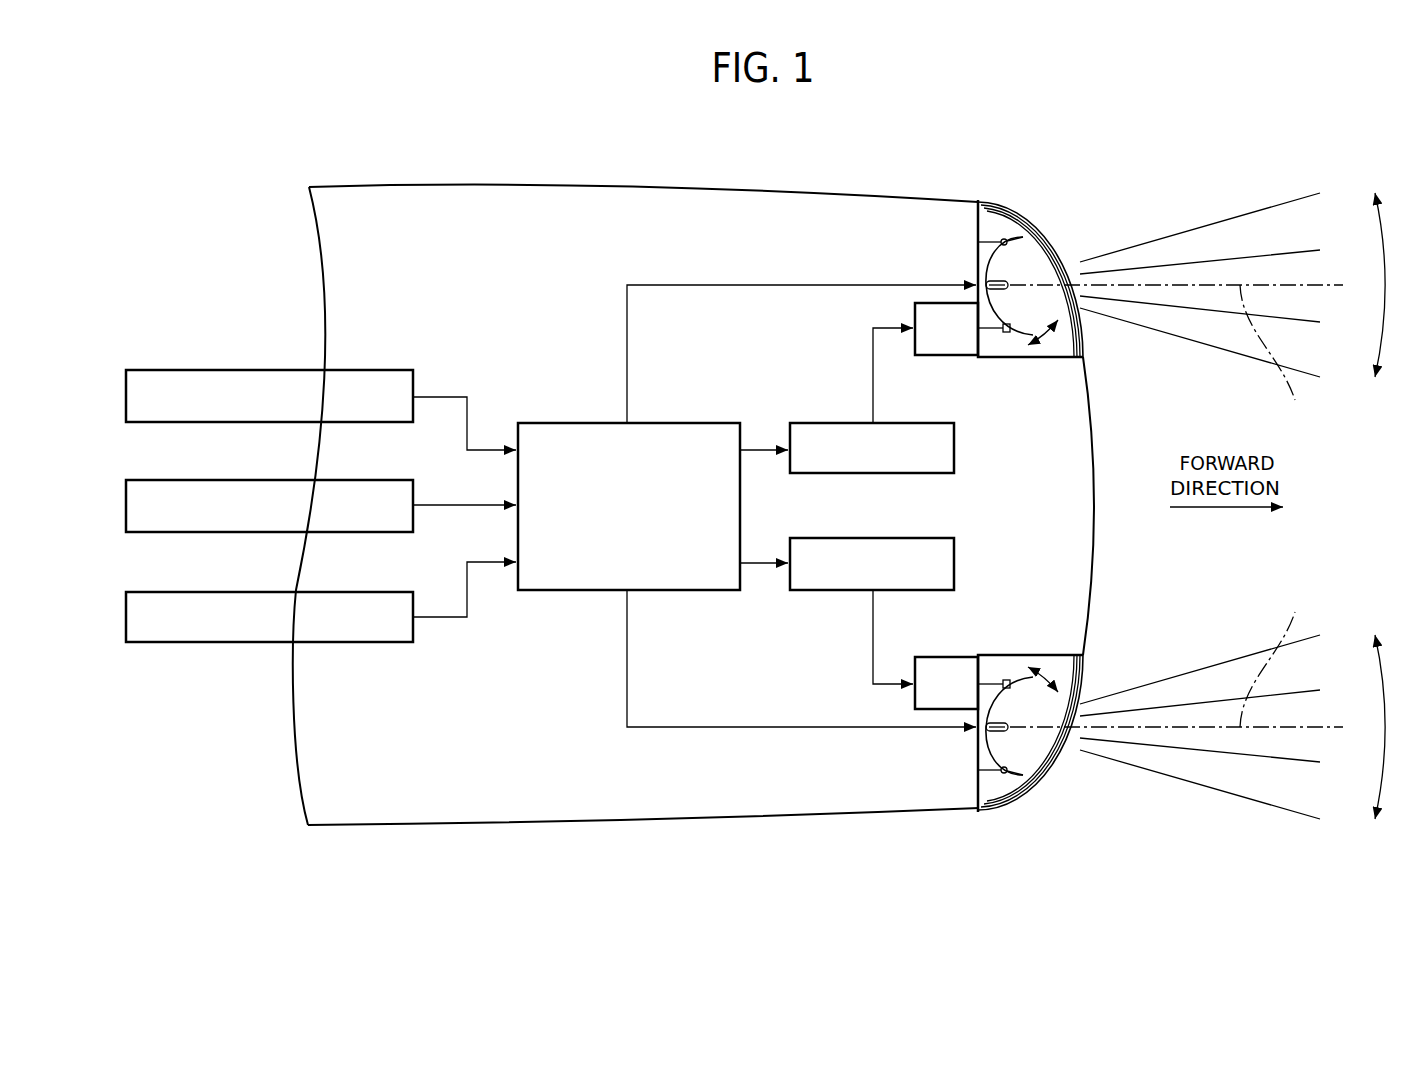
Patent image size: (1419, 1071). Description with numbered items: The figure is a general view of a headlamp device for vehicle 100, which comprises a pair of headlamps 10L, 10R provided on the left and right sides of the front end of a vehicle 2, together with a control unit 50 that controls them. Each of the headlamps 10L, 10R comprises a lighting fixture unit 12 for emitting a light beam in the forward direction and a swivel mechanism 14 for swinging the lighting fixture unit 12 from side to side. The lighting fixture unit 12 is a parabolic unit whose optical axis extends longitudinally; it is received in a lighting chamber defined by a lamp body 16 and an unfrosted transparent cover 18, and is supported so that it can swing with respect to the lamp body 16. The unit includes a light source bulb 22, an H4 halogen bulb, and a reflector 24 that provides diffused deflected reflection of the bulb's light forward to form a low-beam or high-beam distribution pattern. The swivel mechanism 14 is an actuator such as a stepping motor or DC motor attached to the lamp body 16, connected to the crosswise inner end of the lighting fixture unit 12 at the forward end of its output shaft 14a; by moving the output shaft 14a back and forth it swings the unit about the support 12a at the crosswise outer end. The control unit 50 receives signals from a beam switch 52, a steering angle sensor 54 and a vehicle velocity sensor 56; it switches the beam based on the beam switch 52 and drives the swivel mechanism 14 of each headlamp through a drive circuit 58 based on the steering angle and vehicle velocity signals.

The vehicle 2 is at (758, 186).
The headlamp device for vehicle 100 is at (517, 231).
The control unit 50 is at (571, 423).
The beam switch 52 is at (236, 370).
The steering angle sensor 54 is at (236, 480).
The vehicle velocity sensor 56 is at (236, 592).
The drive circuit 58 is at (837, 423).
The headlamp 10L is at (1058, 179).
The headlamp 10R is at (1058, 813).
The lighting fixture unit 12 is at (1029, 256).
The support 12a is at (1003, 238).
The swivel mechanism 14 is at (948, 359).
The output shaft 14a is at (990, 330).
The lamp body 16 is at (977, 222).
The transparent cover 18 is at (1083, 333).
The light source bulb 22 is at (1080, 264).
The reflector 24 is at (989, 275).